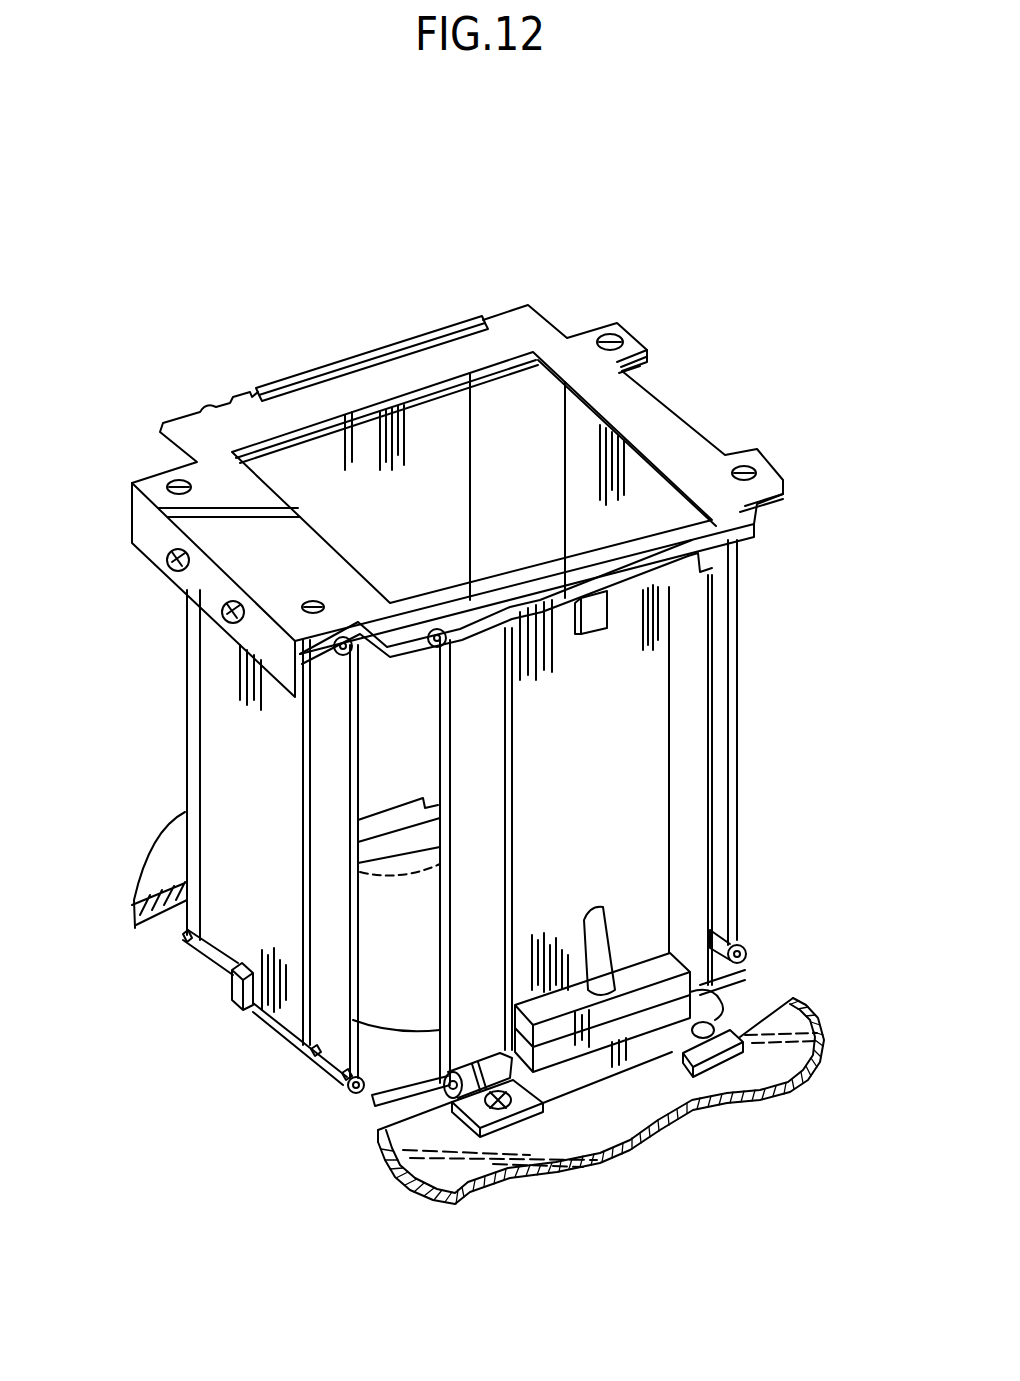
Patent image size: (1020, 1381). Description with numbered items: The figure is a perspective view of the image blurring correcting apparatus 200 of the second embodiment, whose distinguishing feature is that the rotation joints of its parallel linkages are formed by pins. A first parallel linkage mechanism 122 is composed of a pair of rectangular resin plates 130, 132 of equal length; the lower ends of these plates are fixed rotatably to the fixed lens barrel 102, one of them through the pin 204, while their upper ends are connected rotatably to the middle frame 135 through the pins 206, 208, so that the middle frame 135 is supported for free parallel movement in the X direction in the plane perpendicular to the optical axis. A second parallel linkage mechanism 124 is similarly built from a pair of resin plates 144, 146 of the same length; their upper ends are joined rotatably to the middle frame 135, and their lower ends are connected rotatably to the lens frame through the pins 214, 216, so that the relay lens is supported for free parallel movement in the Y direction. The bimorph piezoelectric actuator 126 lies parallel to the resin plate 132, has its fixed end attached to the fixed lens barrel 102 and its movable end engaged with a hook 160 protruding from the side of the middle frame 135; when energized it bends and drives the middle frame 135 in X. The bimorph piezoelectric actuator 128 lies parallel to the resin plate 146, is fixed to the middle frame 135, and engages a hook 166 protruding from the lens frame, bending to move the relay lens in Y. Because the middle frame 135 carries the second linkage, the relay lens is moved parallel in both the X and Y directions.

The image blurring correcting apparatus 200 is at (610, 268).
The fixed lens barrel 102 is at (750, 1080).
The parallel linkage mechanism 122 is at (300, 345).
The parallel linkage mechanism 124 is at (647, 390).
The bimorph piezoelectric actuator 126 is at (648, 793).
The bimorph piezoelectric actuator 128 is at (220, 750).
The resin plate 130 is at (293, 477).
The resin plate 132 is at (695, 855).
The middle frame 135 is at (662, 422).
The resin plate 144 is at (738, 649).
The resin plate 146 is at (327, 993).
The hook 160 is at (592, 620).
The hook 166 is at (233, 988).
The pin 204 is at (427, 1117).
The pin 206 is at (362, 360).
The pin 208 is at (518, 613).
The pin 214 is at (745, 950).
The pin 216 is at (363, 1093).